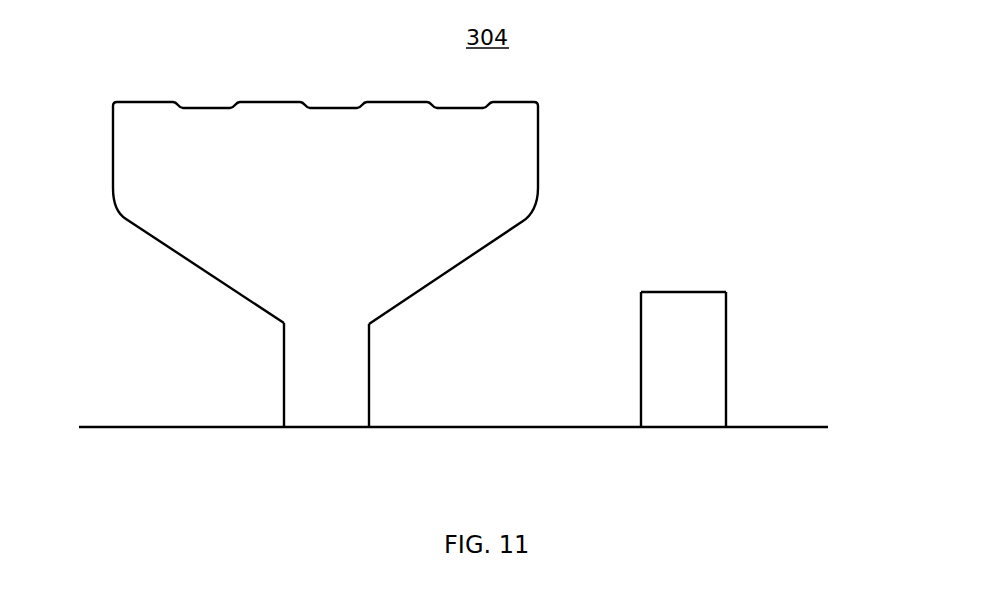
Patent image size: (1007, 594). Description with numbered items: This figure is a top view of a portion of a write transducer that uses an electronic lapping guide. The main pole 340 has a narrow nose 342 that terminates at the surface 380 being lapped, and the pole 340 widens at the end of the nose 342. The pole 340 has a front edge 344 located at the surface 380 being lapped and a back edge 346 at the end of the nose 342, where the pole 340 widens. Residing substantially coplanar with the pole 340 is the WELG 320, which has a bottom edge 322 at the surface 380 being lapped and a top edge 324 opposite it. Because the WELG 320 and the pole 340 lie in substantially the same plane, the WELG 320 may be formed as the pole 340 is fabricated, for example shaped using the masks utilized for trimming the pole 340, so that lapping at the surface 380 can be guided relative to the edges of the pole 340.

The WELG 320 is at (726, 343).
The bottom edge 322 is at (680, 448).
The top edge 324 is at (612, 292).
The main pole 340 is at (113, 153).
The nose 342 is at (410, 396).
The front edge 344 is at (320, 445).
The back edge 346 is at (260, 326).
The surface being lapped 380 is at (860, 427).